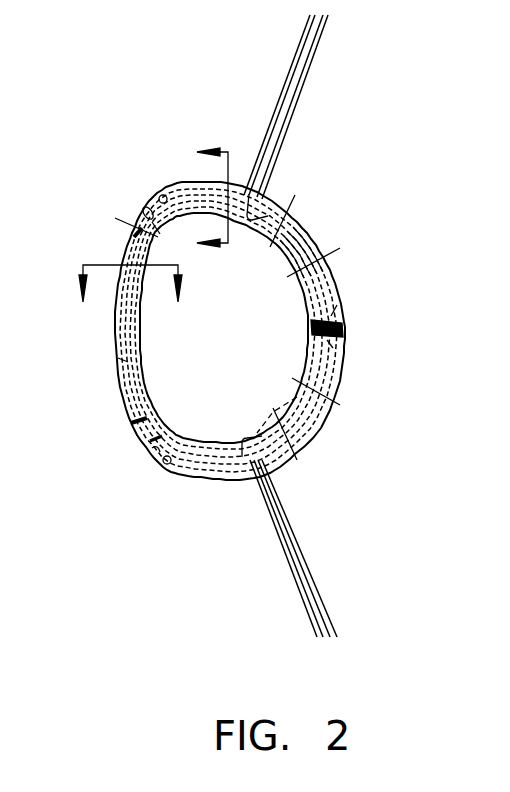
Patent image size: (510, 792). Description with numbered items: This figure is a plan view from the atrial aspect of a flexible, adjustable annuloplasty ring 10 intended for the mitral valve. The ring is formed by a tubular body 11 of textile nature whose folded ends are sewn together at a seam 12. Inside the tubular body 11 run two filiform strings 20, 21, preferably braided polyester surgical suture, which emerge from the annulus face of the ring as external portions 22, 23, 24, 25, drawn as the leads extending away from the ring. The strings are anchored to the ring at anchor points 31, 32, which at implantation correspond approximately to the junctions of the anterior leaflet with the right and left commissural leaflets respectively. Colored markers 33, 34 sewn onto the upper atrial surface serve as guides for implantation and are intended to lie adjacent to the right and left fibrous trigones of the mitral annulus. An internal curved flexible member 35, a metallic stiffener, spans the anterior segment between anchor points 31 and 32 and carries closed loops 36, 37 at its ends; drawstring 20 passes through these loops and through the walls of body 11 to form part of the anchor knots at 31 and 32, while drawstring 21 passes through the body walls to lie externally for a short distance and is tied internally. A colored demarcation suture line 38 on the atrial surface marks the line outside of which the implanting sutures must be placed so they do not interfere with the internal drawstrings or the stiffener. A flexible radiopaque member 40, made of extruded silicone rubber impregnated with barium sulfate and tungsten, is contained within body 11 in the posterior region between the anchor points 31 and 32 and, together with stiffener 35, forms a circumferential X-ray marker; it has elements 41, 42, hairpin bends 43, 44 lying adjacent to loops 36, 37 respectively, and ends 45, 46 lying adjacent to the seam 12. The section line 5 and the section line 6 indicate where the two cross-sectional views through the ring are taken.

The annuloplasty ring 10 is at (278, 461).
The tubular body 11 is at (305, 423).
The seam 12 is at (343, 325).
The filiform string 20 is at (233, 225).
The filiform string 21 is at (305, 318).
The external portion 22 is at (290, 70).
The external portion 23 is at (277, 525).
The external portion 24 is at (297, 98).
The external portion 25 is at (298, 540).
The anchor point 31 is at (140, 202).
The anchor point 32 is at (140, 451).
The colored marker 33 is at (128, 228).
The colored marker 34 is at (127, 420).
The internal curved flexible member 35 is at (118, 358).
The closed loop 36 is at (147, 198).
The closed loop 37 is at (152, 457).
The colored demarcation suture line 38 is at (292, 395).
The flexible radiopaque member 40 is at (335, 388).
The element 41 is at (308, 240).
The element 42 is at (298, 222).
The hairpin bend 43 is at (165, 183).
The hairpin bend 44 is at (167, 471).
The end 45 is at (337, 305).
The end 46 is at (333, 348).
The section line 5 is at (201, 198).
The section line 6 is at (130, 296).